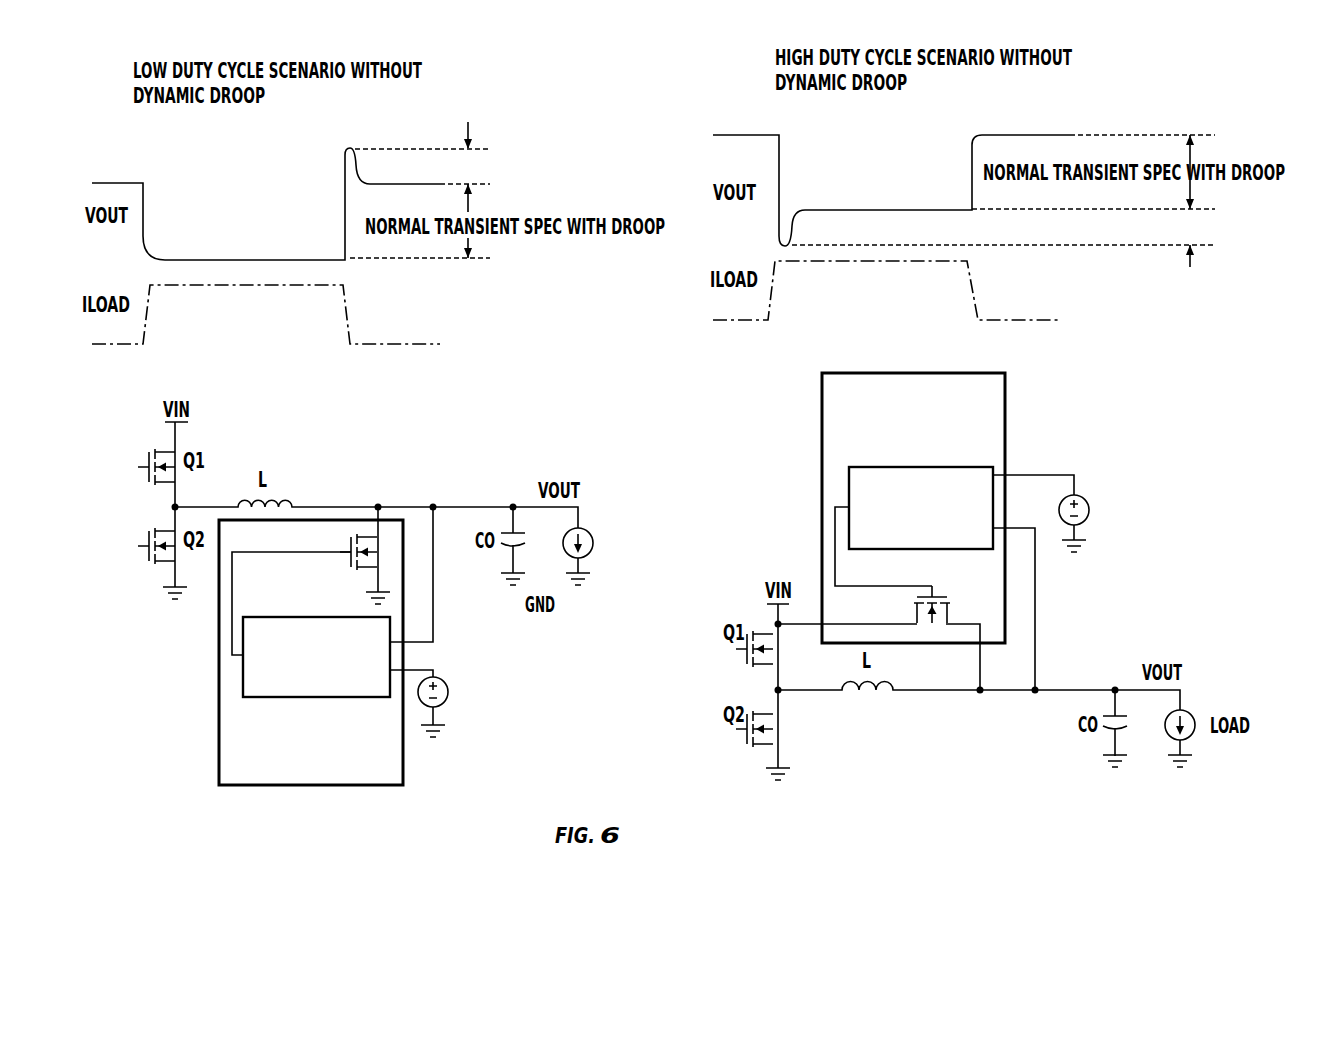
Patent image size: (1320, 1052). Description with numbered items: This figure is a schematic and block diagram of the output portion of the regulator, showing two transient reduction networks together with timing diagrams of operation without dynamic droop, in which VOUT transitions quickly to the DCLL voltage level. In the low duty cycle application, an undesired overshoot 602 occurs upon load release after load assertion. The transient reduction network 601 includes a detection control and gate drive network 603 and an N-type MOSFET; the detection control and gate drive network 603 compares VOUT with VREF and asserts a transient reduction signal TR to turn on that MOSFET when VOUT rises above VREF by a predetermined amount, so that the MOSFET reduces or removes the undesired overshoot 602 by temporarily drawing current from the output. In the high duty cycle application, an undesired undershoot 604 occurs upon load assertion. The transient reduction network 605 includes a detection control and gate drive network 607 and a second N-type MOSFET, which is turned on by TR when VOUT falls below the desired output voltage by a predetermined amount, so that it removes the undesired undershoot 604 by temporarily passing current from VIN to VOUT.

The transient reduction network 601 is at (304, 646).
The undesired overshoot 602 is at (490, 151).
The detection control and gate drive network 603 is at (315, 617).
The undesired undershoot 604 is at (1025, 242).
The transient reduction network 605 is at (929, 531).
The detection control and gate drive network 607 is at (927, 467).